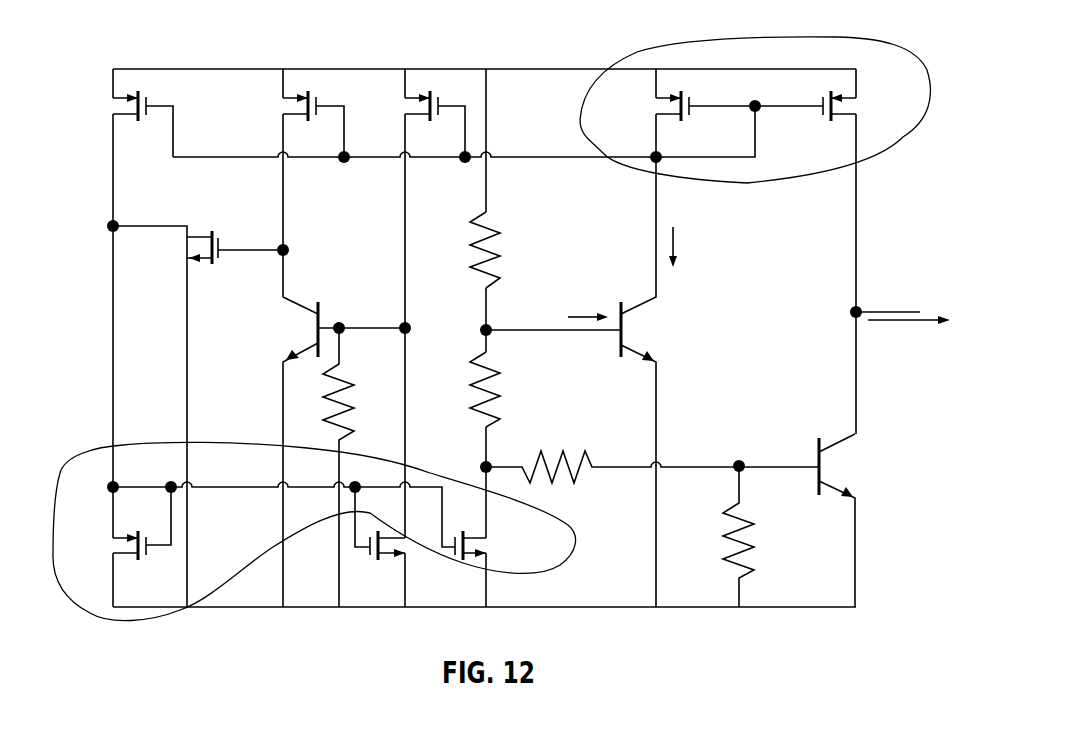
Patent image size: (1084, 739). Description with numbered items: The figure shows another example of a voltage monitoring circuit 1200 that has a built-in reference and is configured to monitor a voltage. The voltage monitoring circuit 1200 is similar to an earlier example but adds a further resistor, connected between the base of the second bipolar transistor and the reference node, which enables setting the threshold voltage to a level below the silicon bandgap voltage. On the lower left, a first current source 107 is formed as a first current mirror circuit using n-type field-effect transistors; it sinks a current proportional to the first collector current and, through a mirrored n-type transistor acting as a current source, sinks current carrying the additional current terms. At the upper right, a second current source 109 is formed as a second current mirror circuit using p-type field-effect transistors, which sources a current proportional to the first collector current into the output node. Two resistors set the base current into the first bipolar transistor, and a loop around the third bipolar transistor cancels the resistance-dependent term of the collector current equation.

The voltage monitoring circuit 1200 is at (140, 23).
The first current source 107 is at (200, 443).
The second current source 109 is at (840, 40).